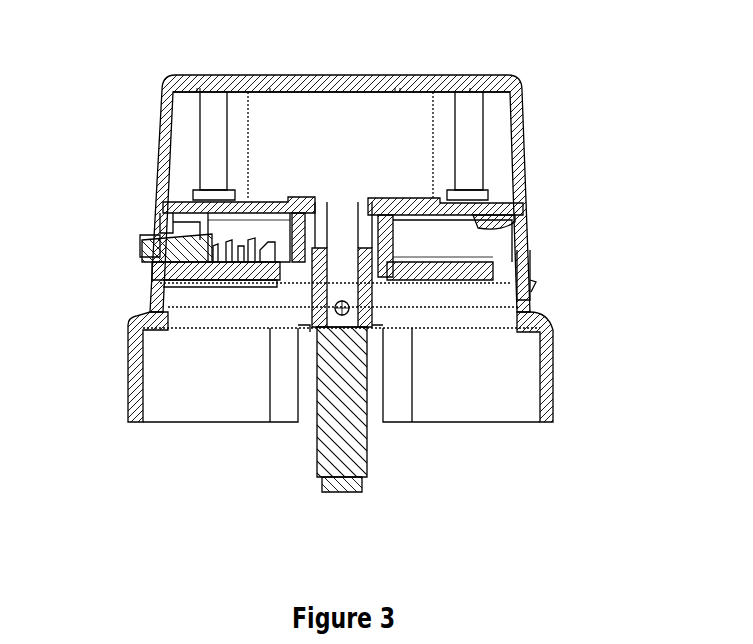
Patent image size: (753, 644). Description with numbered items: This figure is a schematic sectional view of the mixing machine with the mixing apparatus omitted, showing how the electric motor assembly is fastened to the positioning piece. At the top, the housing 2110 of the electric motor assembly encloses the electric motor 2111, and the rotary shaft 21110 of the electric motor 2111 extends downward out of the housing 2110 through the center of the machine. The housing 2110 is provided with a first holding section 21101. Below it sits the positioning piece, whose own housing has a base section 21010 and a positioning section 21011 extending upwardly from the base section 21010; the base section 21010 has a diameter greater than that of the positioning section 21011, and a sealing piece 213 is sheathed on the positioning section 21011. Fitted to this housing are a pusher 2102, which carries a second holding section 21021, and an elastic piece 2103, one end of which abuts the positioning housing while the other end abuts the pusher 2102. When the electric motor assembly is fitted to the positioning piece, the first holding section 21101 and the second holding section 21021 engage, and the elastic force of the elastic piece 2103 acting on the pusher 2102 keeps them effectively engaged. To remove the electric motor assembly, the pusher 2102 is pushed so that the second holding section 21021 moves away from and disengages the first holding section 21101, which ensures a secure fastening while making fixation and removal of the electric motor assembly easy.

The housing 2110 is at (525, 160).
The electric motor 2111 is at (375, 112).
The pusher 2102 is at (150, 242).
The first holding section 21101 is at (165, 262).
The elastic piece 2103 is at (250, 240).
The second holding section 21021 is at (200, 220).
The positioning section 21011 is at (528, 255).
The sealing piece 213 is at (533, 284).
The base section 21010 is at (556, 380).
The rotary shaft 21110 is at (345, 282).